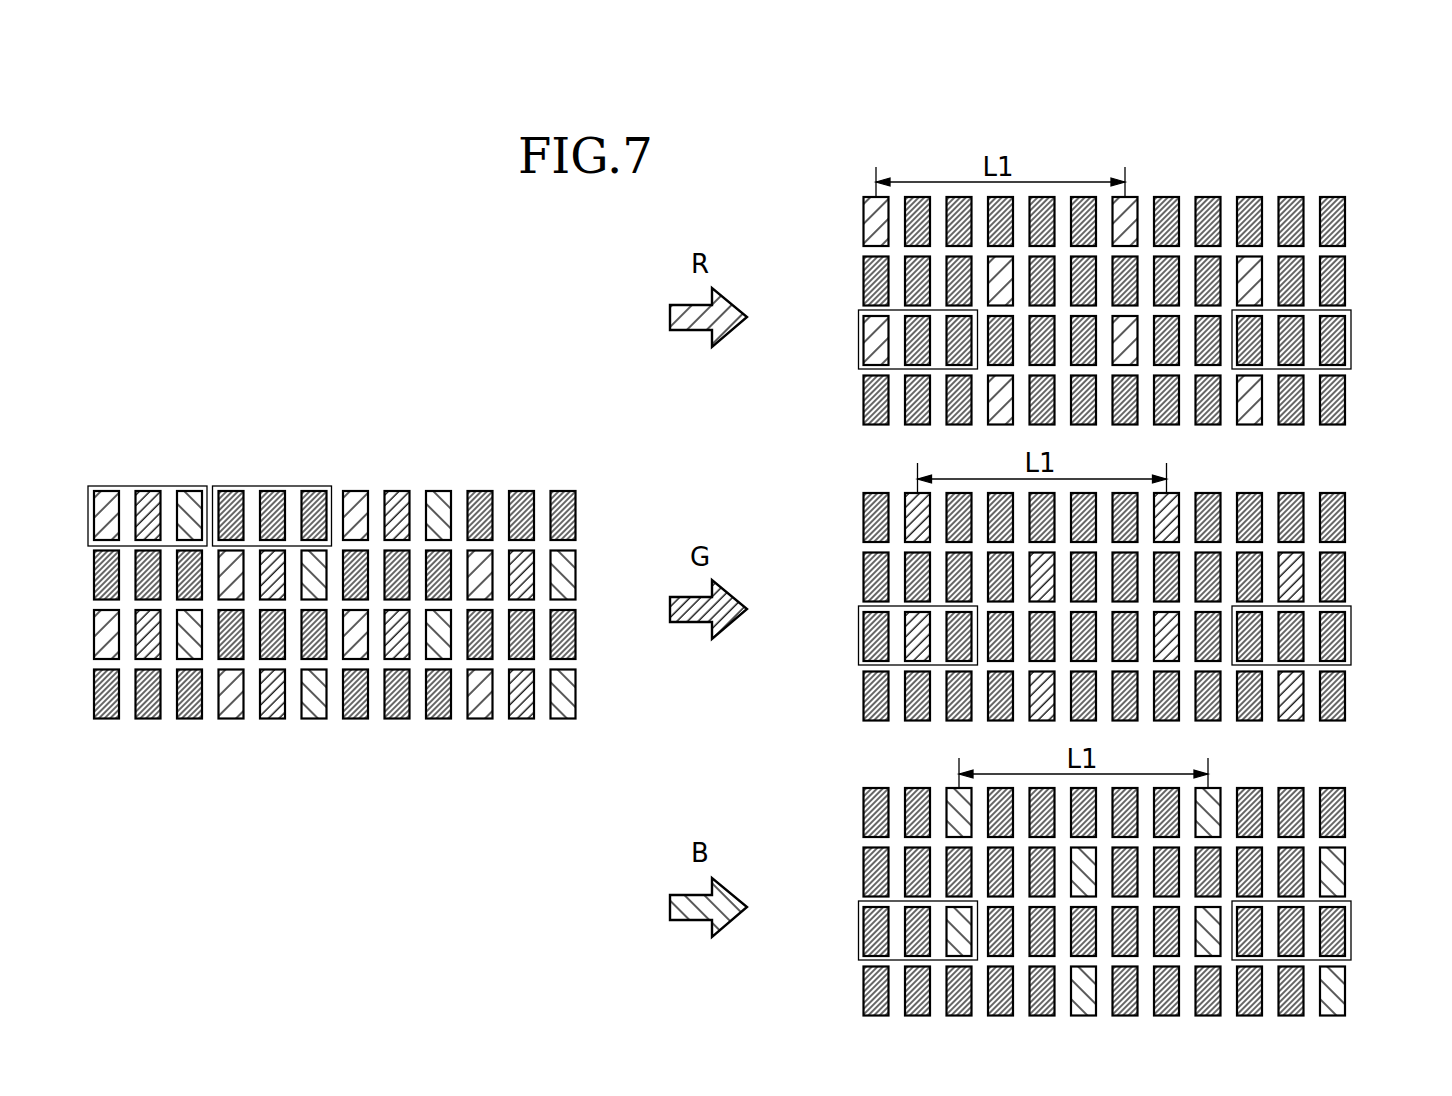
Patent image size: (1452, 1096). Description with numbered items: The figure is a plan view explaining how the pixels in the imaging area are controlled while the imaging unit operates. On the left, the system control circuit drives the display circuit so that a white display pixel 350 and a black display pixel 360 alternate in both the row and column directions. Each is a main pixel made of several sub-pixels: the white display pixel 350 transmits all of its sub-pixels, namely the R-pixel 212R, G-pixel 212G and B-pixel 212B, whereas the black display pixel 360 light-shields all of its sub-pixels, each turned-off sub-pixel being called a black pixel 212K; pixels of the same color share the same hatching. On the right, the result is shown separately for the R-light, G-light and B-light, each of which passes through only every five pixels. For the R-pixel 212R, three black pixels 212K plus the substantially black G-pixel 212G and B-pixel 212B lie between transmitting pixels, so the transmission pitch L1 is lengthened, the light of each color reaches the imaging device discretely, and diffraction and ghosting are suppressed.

The black pixel 212K is at (436, 712).
The R-pixel 212R is at (353, 500).
The G-pixel 212G is at (270, 712).
The B-pixel 212B is at (441, 502).
The white display pixel 350 is at (141, 486).
The black display pixel 360 is at (244, 486).